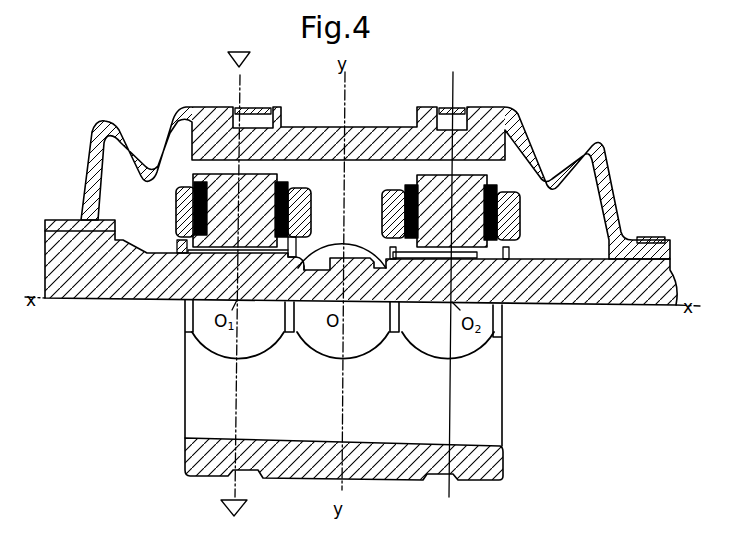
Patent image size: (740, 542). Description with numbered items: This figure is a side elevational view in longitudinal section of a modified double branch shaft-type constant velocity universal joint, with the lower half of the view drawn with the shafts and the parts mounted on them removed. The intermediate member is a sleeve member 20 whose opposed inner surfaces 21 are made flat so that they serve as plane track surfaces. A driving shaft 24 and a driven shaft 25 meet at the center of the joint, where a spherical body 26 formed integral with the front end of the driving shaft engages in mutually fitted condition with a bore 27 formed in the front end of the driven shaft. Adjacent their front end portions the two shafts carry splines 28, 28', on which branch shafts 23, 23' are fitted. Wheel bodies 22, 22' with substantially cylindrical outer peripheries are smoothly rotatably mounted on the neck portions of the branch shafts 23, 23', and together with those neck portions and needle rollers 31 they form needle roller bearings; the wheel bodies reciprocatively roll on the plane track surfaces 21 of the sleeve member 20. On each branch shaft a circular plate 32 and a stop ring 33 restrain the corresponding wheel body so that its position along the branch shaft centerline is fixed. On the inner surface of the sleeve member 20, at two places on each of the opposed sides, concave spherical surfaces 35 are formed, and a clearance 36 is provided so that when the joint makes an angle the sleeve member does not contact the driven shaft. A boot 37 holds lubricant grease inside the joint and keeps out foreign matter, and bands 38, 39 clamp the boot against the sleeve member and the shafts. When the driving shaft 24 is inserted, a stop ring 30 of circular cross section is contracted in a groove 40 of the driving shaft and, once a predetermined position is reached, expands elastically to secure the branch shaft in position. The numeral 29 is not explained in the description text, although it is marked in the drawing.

The sleeve member 20 is at (360, 133).
The opposed inner surfaces 21 is at (360, 177).
The wheel body 22 is at (172, 209).
The wheel body 22' is at (530, 216).
The branch shaft 23 is at (235, 210).
The branch shaft 23' is at (452, 211).
The driving shaft 24 is at (100, 293).
The driven shaft 25 is at (603, 298).
The spherical body 26 is at (362, 298).
The bore 27 is at (383, 253).
The splines 28 is at (218, 289).
The splines 28' is at (488, 248).
The spacer 29 is at (177, 241).
The stop ring 30 is at (302, 242).
The needle rollers 31 is at (310, 197).
The circular plate 32 is at (187, 175).
The stop ring 33 is at (278, 187).
The concave spherical surfaces 35 is at (257, 348).
The clearance 36 is at (328, 347).
The boot 37 is at (174, 126).
The band 38 is at (257, 108).
The band 39 is at (645, 238).
The groove 40 is at (296, 268).